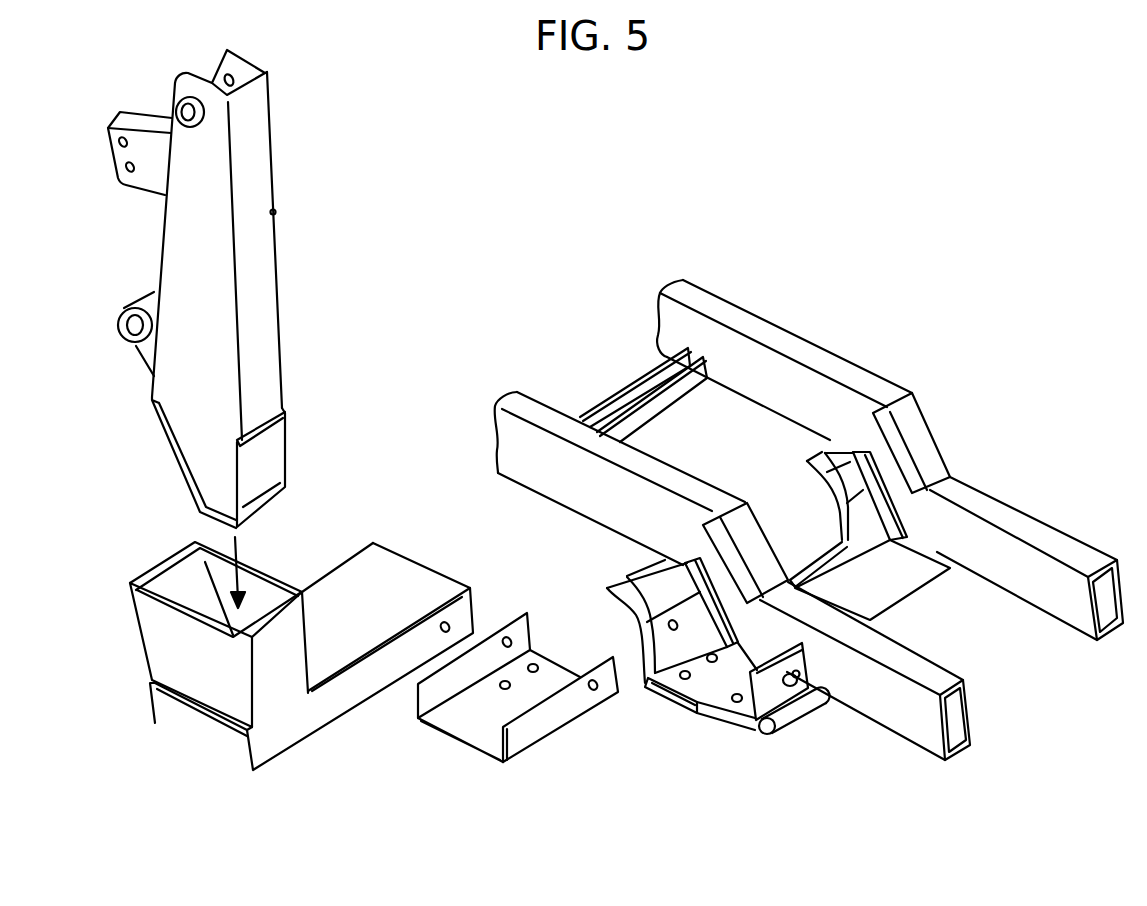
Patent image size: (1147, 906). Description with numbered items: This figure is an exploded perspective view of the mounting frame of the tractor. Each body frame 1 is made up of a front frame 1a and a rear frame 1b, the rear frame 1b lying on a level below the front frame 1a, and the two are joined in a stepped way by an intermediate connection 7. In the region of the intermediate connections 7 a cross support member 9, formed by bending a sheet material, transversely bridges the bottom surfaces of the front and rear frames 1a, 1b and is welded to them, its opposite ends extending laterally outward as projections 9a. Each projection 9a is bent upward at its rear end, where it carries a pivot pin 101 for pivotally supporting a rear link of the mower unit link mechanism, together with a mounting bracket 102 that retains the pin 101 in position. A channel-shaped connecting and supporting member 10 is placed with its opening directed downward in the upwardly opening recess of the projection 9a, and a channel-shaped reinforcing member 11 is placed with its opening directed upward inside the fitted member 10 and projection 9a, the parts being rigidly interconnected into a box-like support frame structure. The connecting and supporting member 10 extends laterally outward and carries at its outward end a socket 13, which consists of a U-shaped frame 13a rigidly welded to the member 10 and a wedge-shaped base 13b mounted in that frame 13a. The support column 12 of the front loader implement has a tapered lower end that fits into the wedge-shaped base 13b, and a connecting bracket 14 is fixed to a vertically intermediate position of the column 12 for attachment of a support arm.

The body frame 1 is at (774, 525).
The front frame 1a is at (810, 355).
The rear frame 1b is at (1053, 600).
The intermediate connection 7 is at (757, 527).
The cross support member 9 is at (648, 642).
The projection 9a is at (670, 700).
The connecting and supporting member 10 is at (353, 560).
The reinforcing member 11 is at (440, 740).
The support column 12 is at (266, 270).
The socket 13 is at (190, 607).
The U-shaped frame 13a is at (160, 657).
The wedge-shaped base 13b is at (177, 583).
The connecting bracket 14 is at (120, 153).
The pivot pin 101 is at (765, 737).
The mounting bracket 102 is at (806, 708).